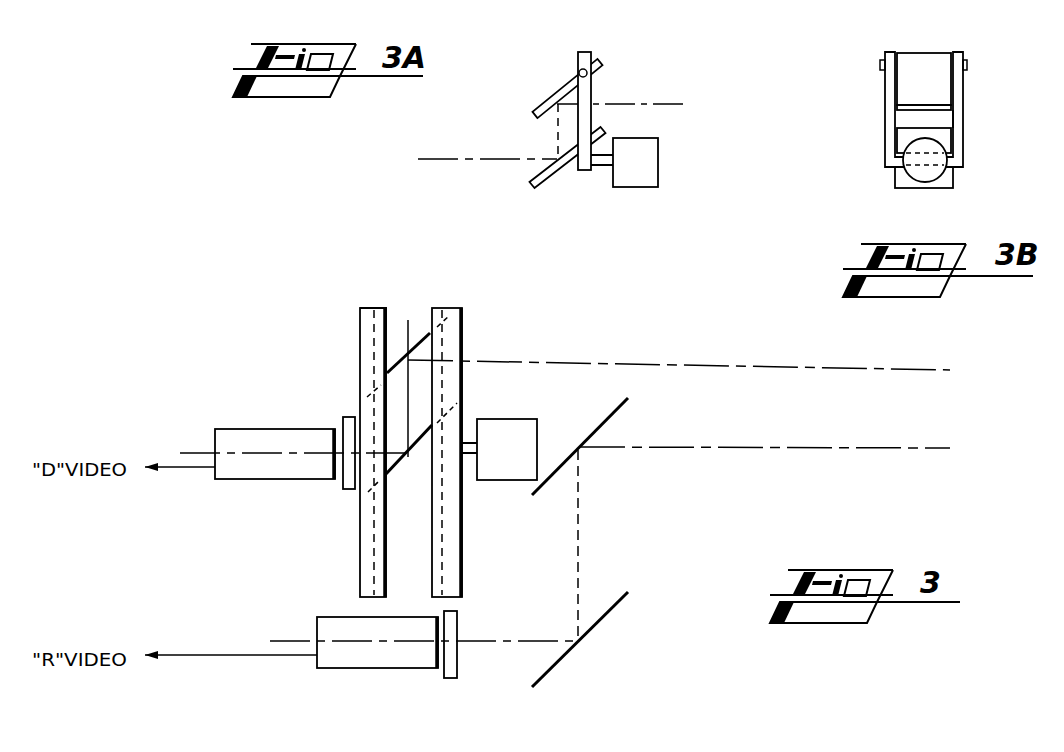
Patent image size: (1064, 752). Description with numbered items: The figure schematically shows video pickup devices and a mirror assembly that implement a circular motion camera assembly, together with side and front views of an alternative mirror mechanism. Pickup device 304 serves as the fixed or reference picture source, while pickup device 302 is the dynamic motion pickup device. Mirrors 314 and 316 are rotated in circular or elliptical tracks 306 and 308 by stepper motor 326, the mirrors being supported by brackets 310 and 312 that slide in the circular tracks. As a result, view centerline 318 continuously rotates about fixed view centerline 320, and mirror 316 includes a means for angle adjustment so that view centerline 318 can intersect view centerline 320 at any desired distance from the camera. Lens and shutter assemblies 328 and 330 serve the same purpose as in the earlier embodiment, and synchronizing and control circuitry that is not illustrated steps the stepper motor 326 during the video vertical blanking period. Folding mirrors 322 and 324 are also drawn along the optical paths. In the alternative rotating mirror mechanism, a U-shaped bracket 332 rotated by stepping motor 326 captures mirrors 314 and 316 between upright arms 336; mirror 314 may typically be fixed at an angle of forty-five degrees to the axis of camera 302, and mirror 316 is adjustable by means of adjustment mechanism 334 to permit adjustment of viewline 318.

In FIG. 3, the pickup device 302 is at (322, 428).
In FIG. 3, the pickup device 304 is at (343, 617).
In FIG. 3, the circular track 306 is at (360, 357).
In FIG. 3, the circular track 308 is at (462, 320).
In FIG. 3, the bracket 310 is at (378, 327).
In FIG. 3, the bracket 312 is at (443, 338).
In FIG. 3, the mirror 314 is at (415, 443).
In FIG. 3A, the mirror 314 is at (597, 128).
In FIG. 3B, the mirror 314 is at (900, 140).
In FIG. 3, the mirror 316 is at (408, 320).
In FIG. 3A, the mirror 316 is at (597, 72).
In FIG. 3B, the mirror 316 is at (918, 65).
In FIG. 3, the view centerline 318 is at (615, 363).
In FIG. 3A, the view centerline 318 is at (440, 158).
In FIG. 3, the fixed view centerline 320 is at (698, 448).
In FIG. 3, the folding mirror 322 is at (622, 407).
In FIG. 3, the folding mirror 324 is at (612, 607).
In FIG. 3, the stepper motor 326 is at (493, 419).
In FIG. 3A, the stepper motor 326 is at (640, 187).
In FIG. 3B, the stepper motor 326 is at (917, 178).
In FIG. 3, the lens and shutter assembly 328 is at (342, 488).
In FIG. 3, the lens and shutter assembly 330 is at (450, 678).
In FIG. 3A, the U-shaped bracket 332 is at (591, 85).
In FIG. 3B, the U-shaped bracket 332 is at (885, 90).
In FIG. 3A, the adjustment mechanism 334 is at (580, 73).
In FIG. 3B, the adjustment mechanism 334 is at (963, 75).
In FIG. 3B, the upright arms 336 is at (963, 93).